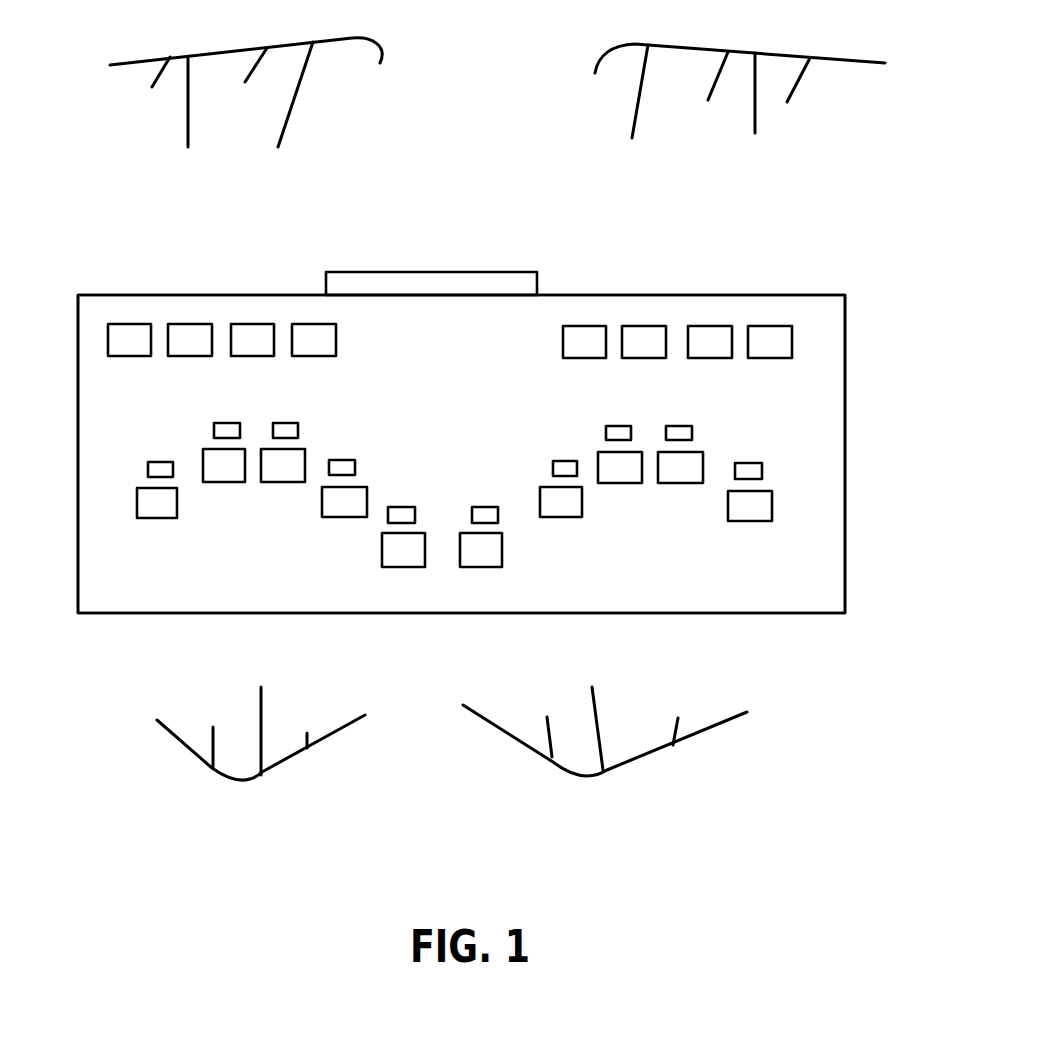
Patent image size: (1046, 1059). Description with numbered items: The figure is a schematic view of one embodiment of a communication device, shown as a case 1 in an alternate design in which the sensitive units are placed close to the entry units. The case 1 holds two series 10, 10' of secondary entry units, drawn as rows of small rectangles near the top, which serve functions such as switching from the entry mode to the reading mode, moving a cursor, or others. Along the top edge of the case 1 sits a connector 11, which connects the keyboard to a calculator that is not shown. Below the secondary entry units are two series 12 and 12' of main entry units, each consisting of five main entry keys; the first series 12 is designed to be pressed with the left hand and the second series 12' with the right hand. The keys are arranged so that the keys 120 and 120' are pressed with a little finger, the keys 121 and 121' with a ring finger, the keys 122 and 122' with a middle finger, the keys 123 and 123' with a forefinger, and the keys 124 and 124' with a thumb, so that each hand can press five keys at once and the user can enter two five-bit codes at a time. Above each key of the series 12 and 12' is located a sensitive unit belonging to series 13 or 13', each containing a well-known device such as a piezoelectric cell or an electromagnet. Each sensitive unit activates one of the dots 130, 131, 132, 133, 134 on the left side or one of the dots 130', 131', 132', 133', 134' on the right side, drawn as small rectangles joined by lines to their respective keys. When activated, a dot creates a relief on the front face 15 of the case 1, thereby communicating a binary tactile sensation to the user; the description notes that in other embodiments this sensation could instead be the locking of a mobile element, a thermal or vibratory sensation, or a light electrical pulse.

The case 1 is at (800, 642).
The series of secondary entry units 10 is at (183, 303).
The series of secondary entry units 10' is at (744, 318).
The connector 11 is at (451, 282).
The series of entry units 12 is at (261, 758).
The series of entry units 12' is at (605, 751).
The series of sensitive units 13 is at (216, 92).
The series of sensitive units 13' is at (760, 91).
The front face 15 is at (815, 450).
The key 120 is at (157, 581).
The key 121 is at (219, 586).
The key 122 is at (272, 561).
The key 123 is at (335, 605).
The key 124 is at (379, 603).
The key 120' is at (734, 579).
The key 121' is at (671, 582).
The key 122' is at (610, 560).
The key 123' is at (553, 600).
The key 124' is at (490, 600).
The dot 130 is at (136, 285).
The dot 131 is at (205, 301).
The dot 132 is at (260, 264).
The dot 133 is at (312, 320).
The dot 134 is at (369, 308).
The dot 130' is at (780, 293).
The dot 131' is at (724, 302).
The dot 132' is at (658, 273).
The dot 133' is at (605, 320).
The dot 134' is at (537, 314).